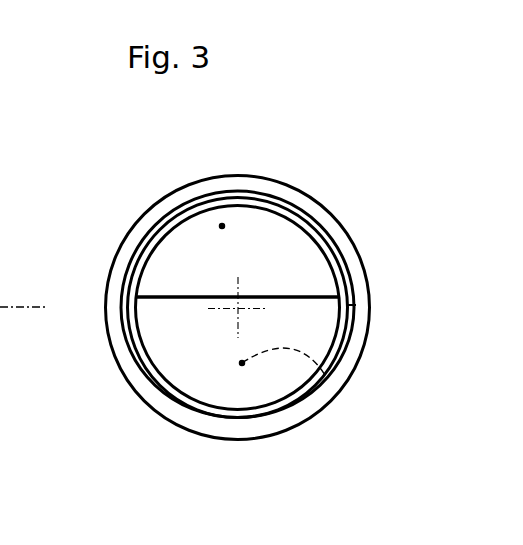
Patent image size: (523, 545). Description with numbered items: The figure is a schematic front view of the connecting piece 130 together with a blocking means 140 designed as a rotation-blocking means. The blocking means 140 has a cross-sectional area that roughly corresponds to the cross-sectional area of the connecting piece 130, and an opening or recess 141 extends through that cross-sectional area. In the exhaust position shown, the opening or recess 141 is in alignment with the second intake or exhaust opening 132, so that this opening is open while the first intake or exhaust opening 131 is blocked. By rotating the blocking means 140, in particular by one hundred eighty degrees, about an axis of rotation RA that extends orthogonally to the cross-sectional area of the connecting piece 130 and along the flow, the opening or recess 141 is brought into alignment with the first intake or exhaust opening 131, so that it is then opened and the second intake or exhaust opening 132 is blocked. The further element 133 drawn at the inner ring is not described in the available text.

The connecting piece 130 is at (247, 257).
The first intake or exhaust opening 131 is at (301, 417).
The second intake or exhaust opening 132 is at (257, 263).
The inner wall liner 133 is at (198, 276).
The blocking means 140 is at (142, 436).
The opening or recess 141 is at (247, 151).
The axis of rotation RA is at (320, 263).